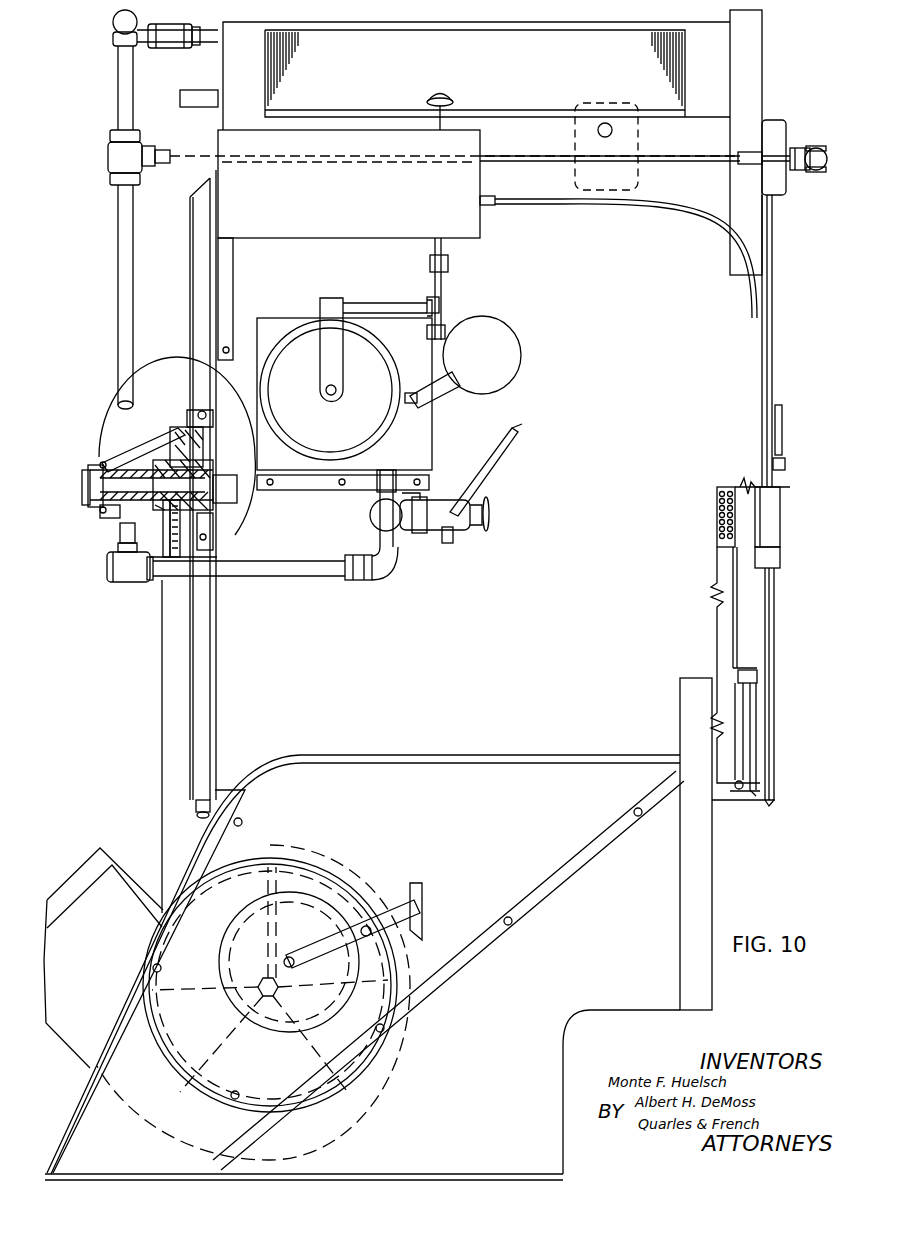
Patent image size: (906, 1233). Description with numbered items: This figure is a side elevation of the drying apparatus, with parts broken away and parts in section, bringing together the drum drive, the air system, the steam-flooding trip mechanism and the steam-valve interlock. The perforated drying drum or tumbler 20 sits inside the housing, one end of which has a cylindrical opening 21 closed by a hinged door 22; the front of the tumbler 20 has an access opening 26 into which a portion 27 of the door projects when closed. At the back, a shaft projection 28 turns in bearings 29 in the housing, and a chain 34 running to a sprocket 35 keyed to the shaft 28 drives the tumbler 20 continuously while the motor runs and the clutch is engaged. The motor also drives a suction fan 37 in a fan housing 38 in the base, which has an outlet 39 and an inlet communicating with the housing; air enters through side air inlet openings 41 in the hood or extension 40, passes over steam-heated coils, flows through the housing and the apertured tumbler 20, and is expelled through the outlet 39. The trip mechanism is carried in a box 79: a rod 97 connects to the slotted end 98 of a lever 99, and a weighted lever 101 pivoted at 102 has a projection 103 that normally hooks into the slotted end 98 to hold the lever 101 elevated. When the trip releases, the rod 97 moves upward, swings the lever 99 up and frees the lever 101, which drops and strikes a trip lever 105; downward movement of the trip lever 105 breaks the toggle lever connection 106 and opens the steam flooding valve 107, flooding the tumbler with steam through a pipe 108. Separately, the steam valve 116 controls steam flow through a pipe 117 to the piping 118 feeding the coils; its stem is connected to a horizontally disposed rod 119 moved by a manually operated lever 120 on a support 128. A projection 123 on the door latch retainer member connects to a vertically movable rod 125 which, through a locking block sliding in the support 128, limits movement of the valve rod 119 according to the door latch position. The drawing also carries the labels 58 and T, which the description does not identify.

The tumbler 20 is at (237, 520).
The cylindrical opening 21 is at (756, 683).
The door 22 is at (755, 604).
The access opening 26 is at (737, 678).
The portion of the door 27 is at (738, 632).
The shaft projection 28 is at (142, 480).
The bearings 29 is at (102, 458).
The chain 34 is at (170, 538).
The sprocket 35 is at (180, 447).
The suction fan 37 is at (247, 885).
The fan housing 38 is at (290, 885).
The outlet 39 is at (70, 890).
The hood 40 is at (690, 195).
The side air inlet openings 41 is at (685, 90).
The hose 58 is at (720, 228).
The box 79 is at (482, 178).
The rod 97 is at (440, 250).
The slotted end 98 is at (440, 300).
The lever 99 is at (433, 277).
The weighted lever 101 is at (521, 353).
The pivot 102 is at (418, 402).
The projection 103 is at (444, 332).
The trip lever 105 is at (496, 456).
The toggle lever connection 106 is at (437, 508).
The steam flooding valve 107 is at (372, 513).
The pipe 108 is at (307, 566).
The steam valve 116 is at (110, 157).
The pipe 117 is at (120, 258).
The piping 118 is at (133, 74).
The horizontally disposed rod 119 is at (200, 157).
The manually operated lever 120 is at (818, 170).
The projection 123 is at (782, 464).
The vertically movable rod 125 is at (774, 302).
The support 128 is at (775, 120).
The thermostat T is at (640, 135).